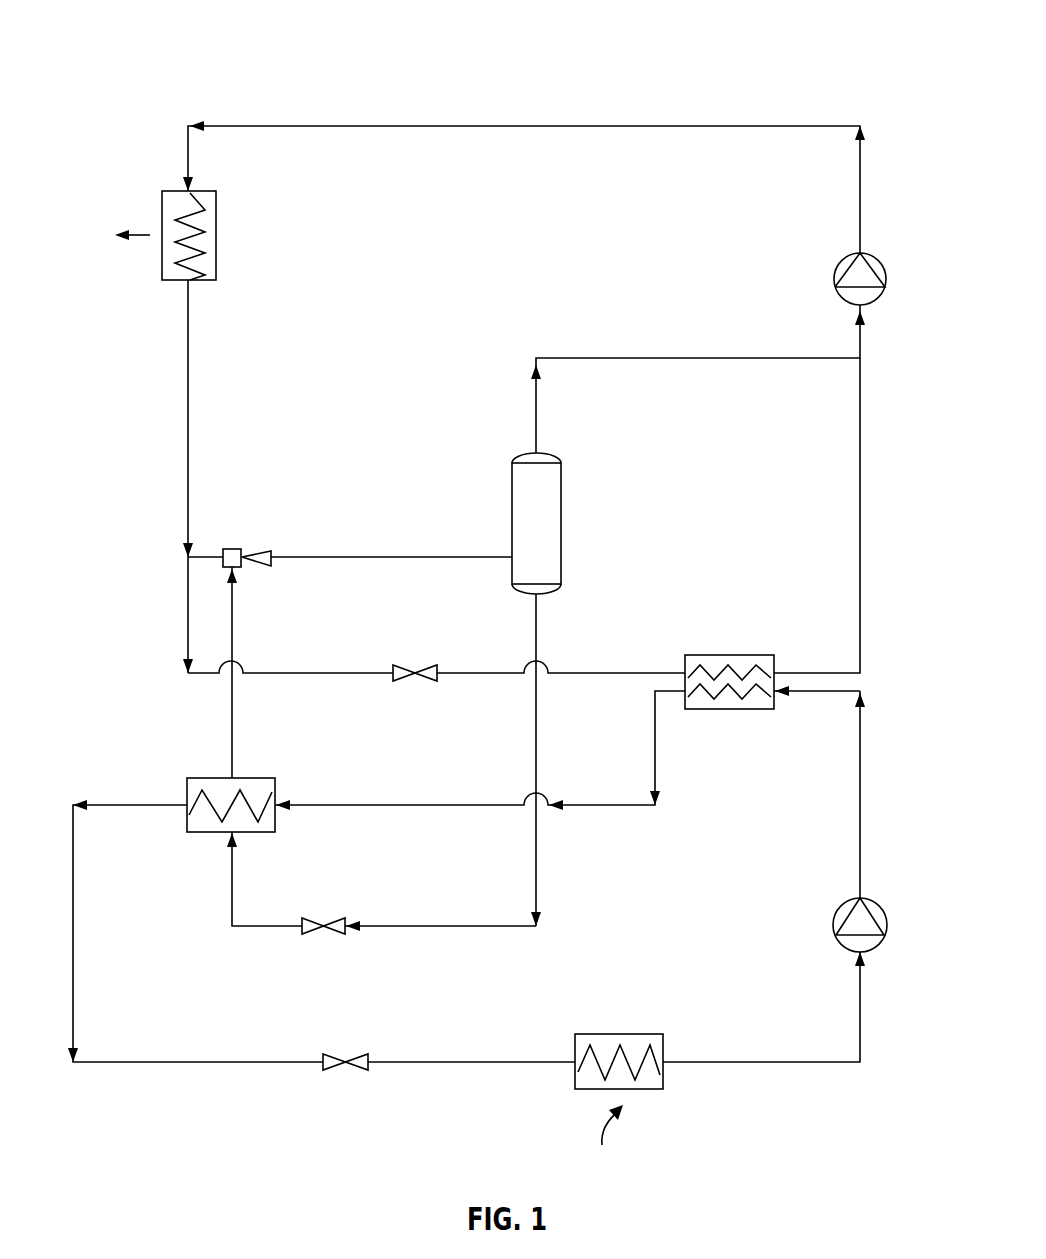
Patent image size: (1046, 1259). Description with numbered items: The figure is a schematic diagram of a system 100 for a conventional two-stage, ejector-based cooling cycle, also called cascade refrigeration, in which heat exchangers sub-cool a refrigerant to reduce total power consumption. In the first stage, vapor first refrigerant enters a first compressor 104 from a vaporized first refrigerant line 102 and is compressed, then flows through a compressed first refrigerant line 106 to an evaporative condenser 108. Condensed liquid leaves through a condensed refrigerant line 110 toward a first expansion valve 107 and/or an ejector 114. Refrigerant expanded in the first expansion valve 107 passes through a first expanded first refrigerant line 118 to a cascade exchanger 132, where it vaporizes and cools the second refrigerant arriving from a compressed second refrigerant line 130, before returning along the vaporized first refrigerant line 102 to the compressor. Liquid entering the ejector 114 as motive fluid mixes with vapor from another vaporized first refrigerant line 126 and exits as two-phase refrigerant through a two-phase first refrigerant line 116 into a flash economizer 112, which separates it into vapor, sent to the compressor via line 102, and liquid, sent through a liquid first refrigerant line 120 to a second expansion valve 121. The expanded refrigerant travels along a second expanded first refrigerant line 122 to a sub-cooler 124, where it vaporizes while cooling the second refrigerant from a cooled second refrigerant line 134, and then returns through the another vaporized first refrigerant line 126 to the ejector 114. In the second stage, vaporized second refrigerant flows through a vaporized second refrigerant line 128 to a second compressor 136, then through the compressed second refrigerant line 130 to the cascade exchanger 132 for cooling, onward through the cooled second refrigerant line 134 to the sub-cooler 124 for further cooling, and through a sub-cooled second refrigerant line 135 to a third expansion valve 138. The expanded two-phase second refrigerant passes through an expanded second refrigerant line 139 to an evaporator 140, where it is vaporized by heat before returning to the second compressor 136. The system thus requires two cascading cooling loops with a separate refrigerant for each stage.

The system 100 is at (815, 35).
The vaporized first refrigerant line 102 is at (862, 340).
The first compressor 104 is at (883, 263).
The compressed first refrigerant line 106 is at (862, 207).
The first expansion valve 107 is at (405, 683).
The evaporative condenser 108 is at (162, 212).
The condensed refrigerant line 110 is at (188, 418).
The flash economizer 112 is at (512, 535).
The ejector 114 is at (255, 549).
The two-phase first refrigerant line 116 is at (420, 560).
The first expanded first refrigerant line 118 is at (492, 675).
The liquid first refrigerant line 120 is at (538, 878).
The second expansion valve 121 is at (312, 934).
The second expanded first refrigerant line 122 is at (242, 928).
The sub-cooler 124 is at (207, 778).
The another vaporized first refrigerant line 126 is at (234, 725).
The vaporized second refrigerant line 128 is at (862, 1030).
The compressed second refrigerant line 130 is at (862, 795).
The cascade exchanger 132 is at (730, 710).
The cooled second refrigerant line 134 is at (492, 807).
The sub-cooled second refrigerant line 135 is at (130, 1064).
The second compressor 136 is at (880, 945).
The third expansion valve 138 is at (333, 1071).
The expanded second refrigerant line 139 is at (492, 1063).
The evaporator 140 is at (625, 1034).